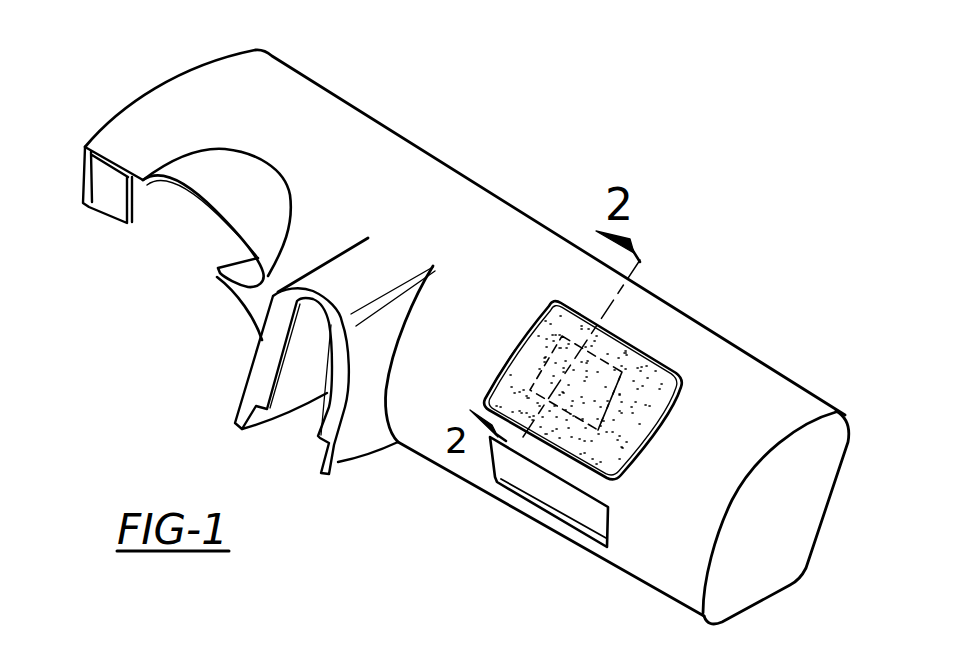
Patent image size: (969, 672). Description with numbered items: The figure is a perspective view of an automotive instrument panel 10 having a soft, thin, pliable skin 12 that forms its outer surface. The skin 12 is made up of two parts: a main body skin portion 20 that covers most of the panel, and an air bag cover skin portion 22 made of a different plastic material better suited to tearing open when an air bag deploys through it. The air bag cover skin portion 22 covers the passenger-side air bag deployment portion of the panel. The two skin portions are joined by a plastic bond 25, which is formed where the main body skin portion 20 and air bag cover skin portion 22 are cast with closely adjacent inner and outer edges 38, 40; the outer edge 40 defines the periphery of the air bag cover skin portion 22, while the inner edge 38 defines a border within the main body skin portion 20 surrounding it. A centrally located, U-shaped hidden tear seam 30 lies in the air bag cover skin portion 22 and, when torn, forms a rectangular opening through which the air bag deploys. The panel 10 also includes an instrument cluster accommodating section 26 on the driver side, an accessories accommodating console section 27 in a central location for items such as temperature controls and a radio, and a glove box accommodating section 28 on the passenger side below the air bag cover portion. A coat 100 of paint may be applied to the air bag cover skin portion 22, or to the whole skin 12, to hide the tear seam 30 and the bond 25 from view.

The automotive instrument panel 10 is at (433, 150).
The skin 12 is at (760, 397).
The main body skin portion 20 is at (818, 410).
The air bag cover skin portion 22 is at (627, 368).
The plastic bond 25 is at (655, 368).
The instrument cluster accommodating section 26 is at (228, 173).
The accessories accommodating console section 27 is at (338, 462).
The glove box accommodating section 28 is at (568, 532).
The hidden tear seam 30 is at (617, 386).
The inner edge 38 is at (517, 337).
The outer edge 40 is at (506, 366).
The coat of paint 100 is at (578, 380).